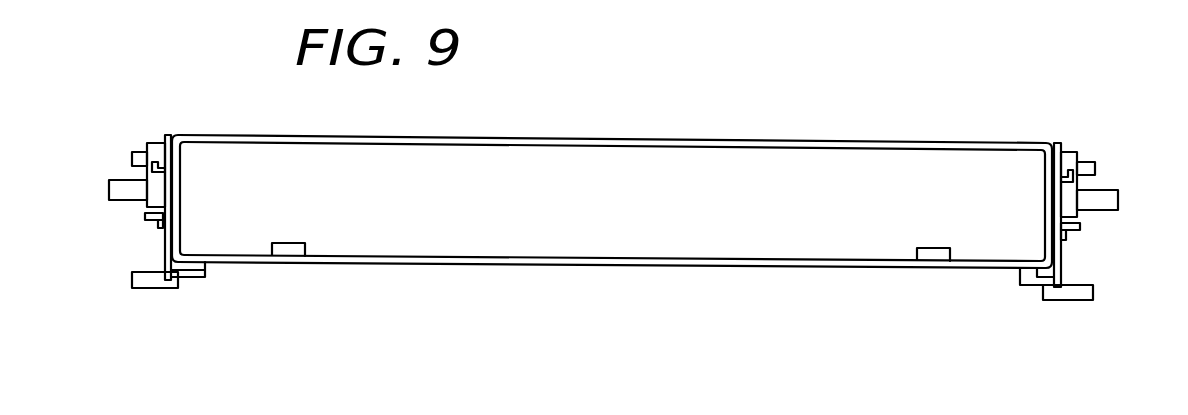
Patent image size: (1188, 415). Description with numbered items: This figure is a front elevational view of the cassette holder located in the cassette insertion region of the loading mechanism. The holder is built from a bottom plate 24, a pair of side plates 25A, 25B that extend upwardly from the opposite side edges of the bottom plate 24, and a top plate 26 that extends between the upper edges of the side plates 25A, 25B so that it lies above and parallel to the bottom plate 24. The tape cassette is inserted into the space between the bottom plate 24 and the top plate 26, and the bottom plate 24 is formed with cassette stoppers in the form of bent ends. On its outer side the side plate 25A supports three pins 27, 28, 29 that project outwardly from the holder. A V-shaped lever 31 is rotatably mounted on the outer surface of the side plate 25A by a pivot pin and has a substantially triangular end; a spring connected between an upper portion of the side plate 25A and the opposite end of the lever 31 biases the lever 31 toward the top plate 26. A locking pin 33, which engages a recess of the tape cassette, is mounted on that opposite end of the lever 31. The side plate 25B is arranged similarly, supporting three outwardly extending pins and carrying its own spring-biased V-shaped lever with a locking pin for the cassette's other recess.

The bottom plate 24 is at (608, 262).
The side plate 25A is at (1047, 200).
The side plate 25B is at (182, 197).
The top plate 26 is at (666, 140).
The pin 27 is at (1095, 170).
The pin 28 is at (1093, 293).
The pin 29 is at (1118, 200).
The V-shaped lever 31 is at (1063, 255).
The locking pin 33 is at (1033, 285).